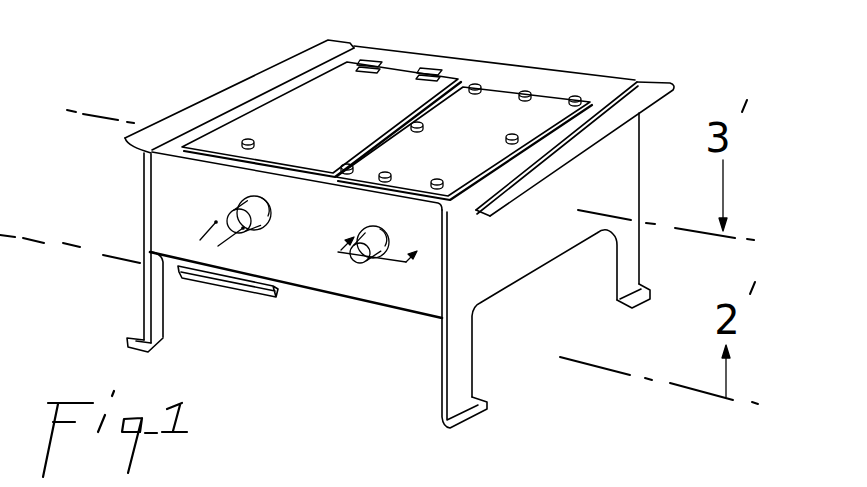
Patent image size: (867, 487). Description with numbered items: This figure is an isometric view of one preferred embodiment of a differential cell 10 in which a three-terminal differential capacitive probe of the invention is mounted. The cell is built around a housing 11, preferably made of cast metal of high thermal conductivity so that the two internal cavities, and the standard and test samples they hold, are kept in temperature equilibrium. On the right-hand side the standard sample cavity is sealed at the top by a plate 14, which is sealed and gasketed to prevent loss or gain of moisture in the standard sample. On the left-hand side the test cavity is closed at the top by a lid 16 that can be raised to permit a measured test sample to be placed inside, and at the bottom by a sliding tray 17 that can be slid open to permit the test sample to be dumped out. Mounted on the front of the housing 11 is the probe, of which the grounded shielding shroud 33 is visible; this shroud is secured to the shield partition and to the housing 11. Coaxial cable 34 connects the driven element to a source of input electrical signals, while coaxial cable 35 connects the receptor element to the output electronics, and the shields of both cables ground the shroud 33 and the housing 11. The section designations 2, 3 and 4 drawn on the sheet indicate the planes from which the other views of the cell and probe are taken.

The differential cell 10 is at (526, 238).
The housing 11 is at (391, 311).
The plate 14 is at (543, 107).
The lid 16 is at (390, 87).
The bottom sliding tray 17 is at (236, 293).
The shielding shroud 33 is at (386, 250).
The coaxial cable 34 is at (326, 265).
The coaxial cable 35 is at (357, 267).
The section line 4- 4 is at (385, 240).
The section line 2- 2 is at (41, 243).
The section line 3- 3 is at (97, 117).